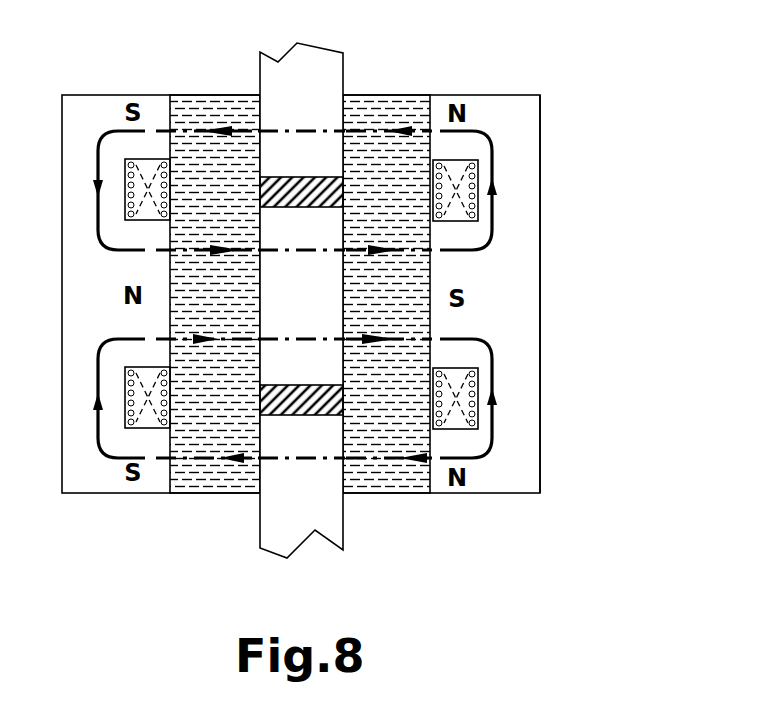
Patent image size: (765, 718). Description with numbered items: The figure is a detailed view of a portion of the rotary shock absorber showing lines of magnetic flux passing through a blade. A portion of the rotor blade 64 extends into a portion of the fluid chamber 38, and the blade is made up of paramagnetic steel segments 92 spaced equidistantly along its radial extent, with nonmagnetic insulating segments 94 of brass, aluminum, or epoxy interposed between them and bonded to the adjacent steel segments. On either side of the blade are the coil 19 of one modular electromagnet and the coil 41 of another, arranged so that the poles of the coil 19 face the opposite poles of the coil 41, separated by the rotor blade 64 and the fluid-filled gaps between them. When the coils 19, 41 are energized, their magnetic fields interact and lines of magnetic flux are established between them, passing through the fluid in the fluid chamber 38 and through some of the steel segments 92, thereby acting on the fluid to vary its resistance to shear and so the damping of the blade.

The coil 19 is at (92, 487).
The fluid chamber 38 is at (388, 115).
The coil 41 is at (520, 495).
The rotor blade 64 is at (272, 562).
The paramagnetic steel segment 92 is at (293, 112).
The nonmagnetic insulating segment 94 is at (313, 192).